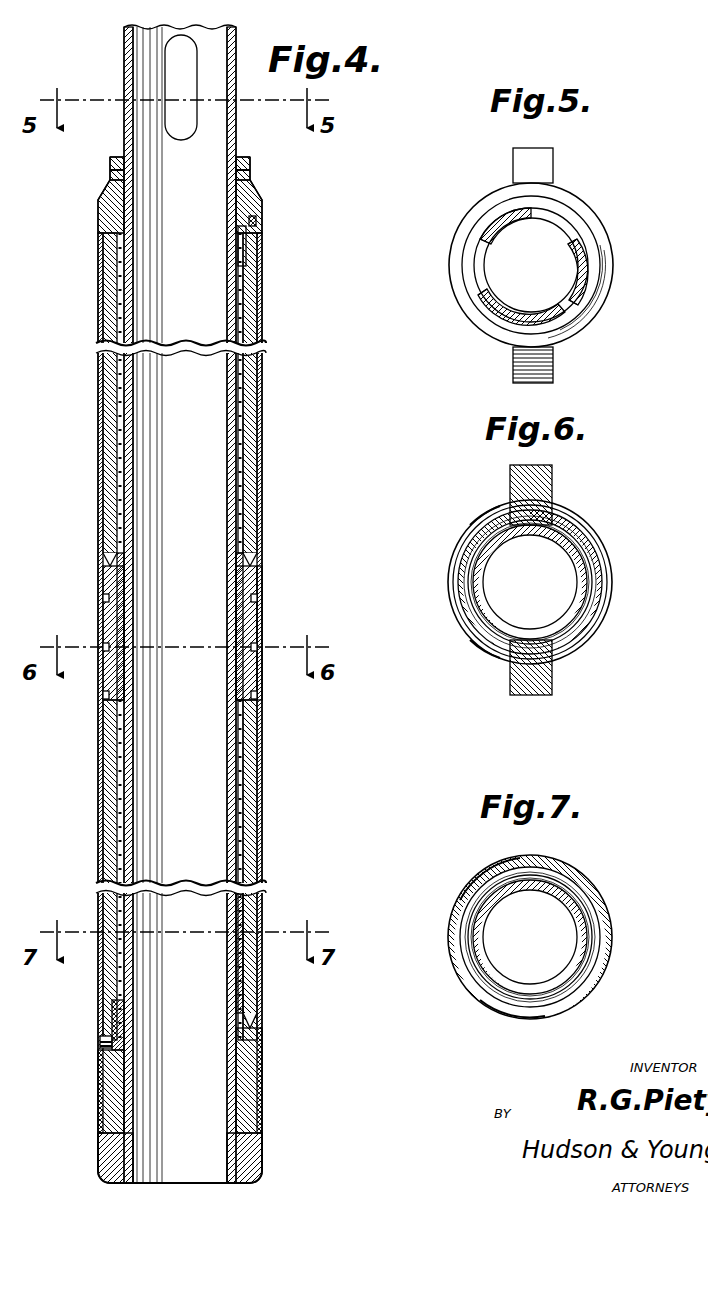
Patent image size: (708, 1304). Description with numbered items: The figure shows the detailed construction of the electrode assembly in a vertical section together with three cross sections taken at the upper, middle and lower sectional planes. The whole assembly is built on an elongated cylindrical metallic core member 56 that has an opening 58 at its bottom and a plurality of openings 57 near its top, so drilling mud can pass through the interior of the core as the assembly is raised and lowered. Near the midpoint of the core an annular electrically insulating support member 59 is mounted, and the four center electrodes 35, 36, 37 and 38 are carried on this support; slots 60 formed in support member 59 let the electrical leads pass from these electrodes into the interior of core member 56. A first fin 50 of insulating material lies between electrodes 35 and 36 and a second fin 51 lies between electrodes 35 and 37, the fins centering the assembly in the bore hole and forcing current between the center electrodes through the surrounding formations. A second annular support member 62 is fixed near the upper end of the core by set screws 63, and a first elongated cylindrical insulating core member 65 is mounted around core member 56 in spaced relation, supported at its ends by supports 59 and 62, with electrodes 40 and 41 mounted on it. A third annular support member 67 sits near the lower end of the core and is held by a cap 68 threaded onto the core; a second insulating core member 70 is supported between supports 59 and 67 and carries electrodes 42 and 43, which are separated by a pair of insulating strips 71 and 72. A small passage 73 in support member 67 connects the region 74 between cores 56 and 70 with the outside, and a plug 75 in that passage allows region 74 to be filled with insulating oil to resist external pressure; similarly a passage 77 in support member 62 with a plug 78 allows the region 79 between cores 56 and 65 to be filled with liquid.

In FIG. 4, the center electrode 35 is at (262, 609).
In FIG. 6, the center electrode 35 is at (613, 582).
In FIG. 6, the center electrode 36 is at (494, 508).
In FIG. 6, the center electrode 37 is at (497, 652).
In FIG. 4, the center electrode 38 is at (103, 622).
In FIG. 6, the center electrode 38 is at (448, 578).
In FIG. 4, the electrode 40 is at (262, 460).
In FIG. 4, the electrode 41 is at (98, 423).
In FIG. 4, the electrode 42 is at (262, 808).
In FIG. 7, the electrode 42 is at (600, 976).
In FIG. 4, the electrode 43 is at (98, 786).
In FIG. 7, the electrode 43 is at (448, 939).
In FIG. 5, the first fin 50 is at (551, 168).
In FIG. 6, the first fin 50 is at (553, 482).
In FIG. 5, the second fin 51 is at (554, 375).
In FIG. 6, the second fin 51 is at (553, 688).
In FIG. 4, the core member 56 is at (227, 298).
In FIG. 5, the core member 56 is at (585, 256).
In FIG. 6, the core member 56 is at (499, 544).
In FIG. 7, the core member 56 is at (494, 904).
In FIG. 4, the openings 57 is at (178, 142).
In FIG. 5, the openings 57 is at (478, 285).
In FIG. 4, the opening 58 is at (177, 1183).
In FIG. 4, the annular support member 59 is at (117, 621).
In FIG. 6, the annular support member 59 is at (585, 618).
In FIG. 4, the slots 60 is at (103, 598).
In FIG. 6, the slots 60 is at (597, 547).
In FIG. 4, the second annular support member 62 is at (255, 200).
In FIG. 4, the set screws 63 is at (110, 171).
In FIG. 4, the first insulating core member 65 is at (252, 318).
In FIG. 4, the third annular support member 67 is at (258, 1070).
In FIG. 4, the cap 68 is at (258, 1155).
In FIG. 4, the second insulating core member 70 is at (250, 860).
In FIG. 7, the second insulating core member 70 is at (613, 940).
In FIG. 7, the insulating strip 71 is at (540, 858).
In FIG. 7, the insulating strip 72 is at (525, 1018).
In FIG. 4, the passage 73 is at (118, 1050).
In FIG. 4, the region 74 is at (242, 914).
In FIG. 7, the region 74 is at (582, 900).
In FIG. 4, the plug 75 is at (100, 1043).
In FIG. 4, the passage 77 is at (252, 254).
In FIG. 4, the plug 78 is at (256, 226).
In FIG. 4, the region 79 is at (244, 392).